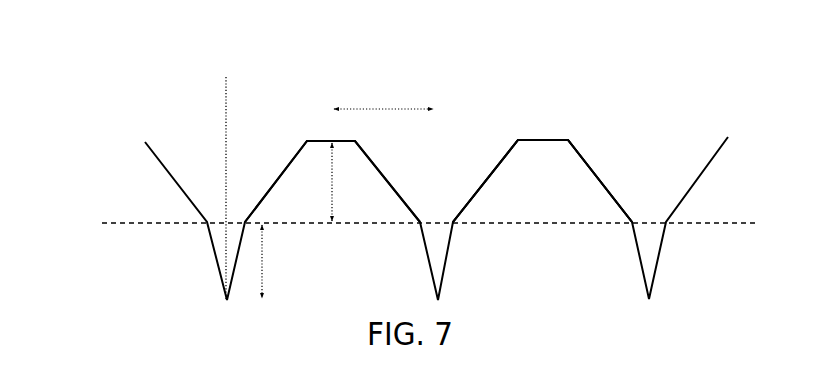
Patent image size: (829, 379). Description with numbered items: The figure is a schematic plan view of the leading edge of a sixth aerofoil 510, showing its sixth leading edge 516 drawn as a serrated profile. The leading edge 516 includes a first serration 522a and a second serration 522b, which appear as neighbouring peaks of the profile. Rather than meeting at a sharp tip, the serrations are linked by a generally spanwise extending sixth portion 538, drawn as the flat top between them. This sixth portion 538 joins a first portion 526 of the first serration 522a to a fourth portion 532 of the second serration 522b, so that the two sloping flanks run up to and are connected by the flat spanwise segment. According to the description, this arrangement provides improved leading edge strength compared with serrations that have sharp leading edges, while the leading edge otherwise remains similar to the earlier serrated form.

The sixth aerofoil 510 is at (123, 193).
The sixth leading edge 516 is at (194, 118).
The first serration 522a is at (520, 82).
The second serration 522b is at (315, 83).
The first portion 526 is at (603, 177).
The fourth portion 532 is at (482, 177).
The sixth portion 538 is at (543, 137).